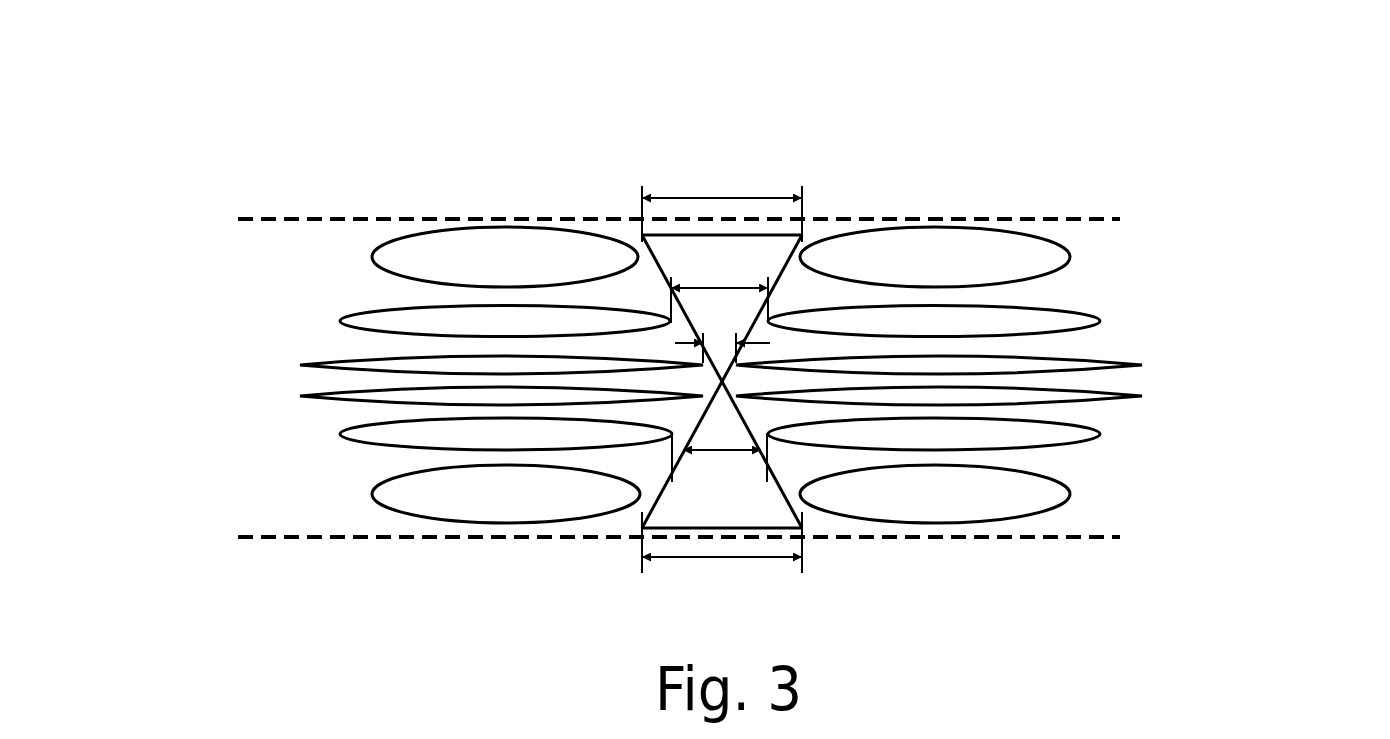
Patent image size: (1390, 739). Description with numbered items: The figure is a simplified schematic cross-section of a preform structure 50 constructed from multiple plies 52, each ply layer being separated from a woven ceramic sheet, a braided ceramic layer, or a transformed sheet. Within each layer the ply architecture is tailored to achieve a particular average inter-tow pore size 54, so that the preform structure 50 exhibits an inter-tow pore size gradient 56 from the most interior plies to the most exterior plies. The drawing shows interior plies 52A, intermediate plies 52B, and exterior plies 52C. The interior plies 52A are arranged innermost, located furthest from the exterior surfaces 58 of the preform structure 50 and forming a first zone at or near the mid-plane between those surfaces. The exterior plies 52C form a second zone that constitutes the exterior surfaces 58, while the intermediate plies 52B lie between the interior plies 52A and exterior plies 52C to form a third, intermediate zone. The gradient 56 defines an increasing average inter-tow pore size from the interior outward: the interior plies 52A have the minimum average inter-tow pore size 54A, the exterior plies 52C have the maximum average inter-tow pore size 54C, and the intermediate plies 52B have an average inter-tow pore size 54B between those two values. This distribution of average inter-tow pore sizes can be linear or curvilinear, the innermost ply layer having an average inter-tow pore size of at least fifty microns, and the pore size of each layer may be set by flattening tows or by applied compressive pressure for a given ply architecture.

The preform structure 50 is at (195, 115).
The plies 52 is at (158, 303).
The interior plies 52A is at (300, 365).
The intermediate plies 52B is at (340, 322).
The exterior plies 52C is at (372, 256).
The average inter-tow pore size 54 is at (783, 173).
The minimum average inter-tow pore size 54A is at (697, 346).
The average inter-tow pore size of intermediate plies 54B is at (719, 370).
The maximum average inter-tow pore size 54C is at (722, 377).
The inter-tow pore size gradient 56 is at (697, 235).
The exterior surfaces 58 is at (977, 218).